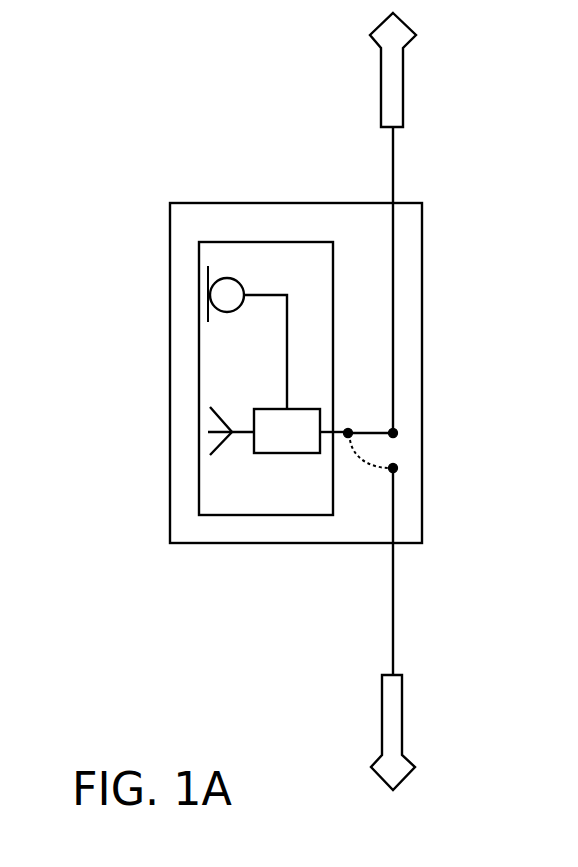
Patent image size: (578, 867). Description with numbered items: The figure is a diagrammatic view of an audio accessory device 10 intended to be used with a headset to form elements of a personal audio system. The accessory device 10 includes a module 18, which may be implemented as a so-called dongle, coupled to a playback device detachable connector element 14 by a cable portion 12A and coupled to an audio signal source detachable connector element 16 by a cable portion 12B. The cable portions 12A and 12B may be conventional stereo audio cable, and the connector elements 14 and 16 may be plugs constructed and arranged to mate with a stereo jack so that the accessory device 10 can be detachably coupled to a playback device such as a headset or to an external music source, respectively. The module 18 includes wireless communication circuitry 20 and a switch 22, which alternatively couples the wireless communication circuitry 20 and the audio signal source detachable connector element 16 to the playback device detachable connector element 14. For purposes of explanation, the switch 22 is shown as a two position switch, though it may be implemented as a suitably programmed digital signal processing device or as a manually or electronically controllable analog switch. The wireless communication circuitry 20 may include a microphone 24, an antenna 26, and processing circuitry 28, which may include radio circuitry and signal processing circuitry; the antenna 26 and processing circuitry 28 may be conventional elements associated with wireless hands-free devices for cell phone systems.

The accessory device 10 is at (303, 160).
The cable portion 12A is at (397, 155).
The cable portion 12B is at (400, 597).
The playback device detachable connector element 14 is at (376, 42).
The audio signal source detachable connector element 16 is at (382, 705).
The module 18 is at (185, 546).
The wireless communication circuitry 20 is at (197, 355).
The switch 22 is at (398, 446).
The microphone 24 is at (230, 278).
The antenna 26 is at (208, 448).
The processing circuitry 28 is at (266, 408).